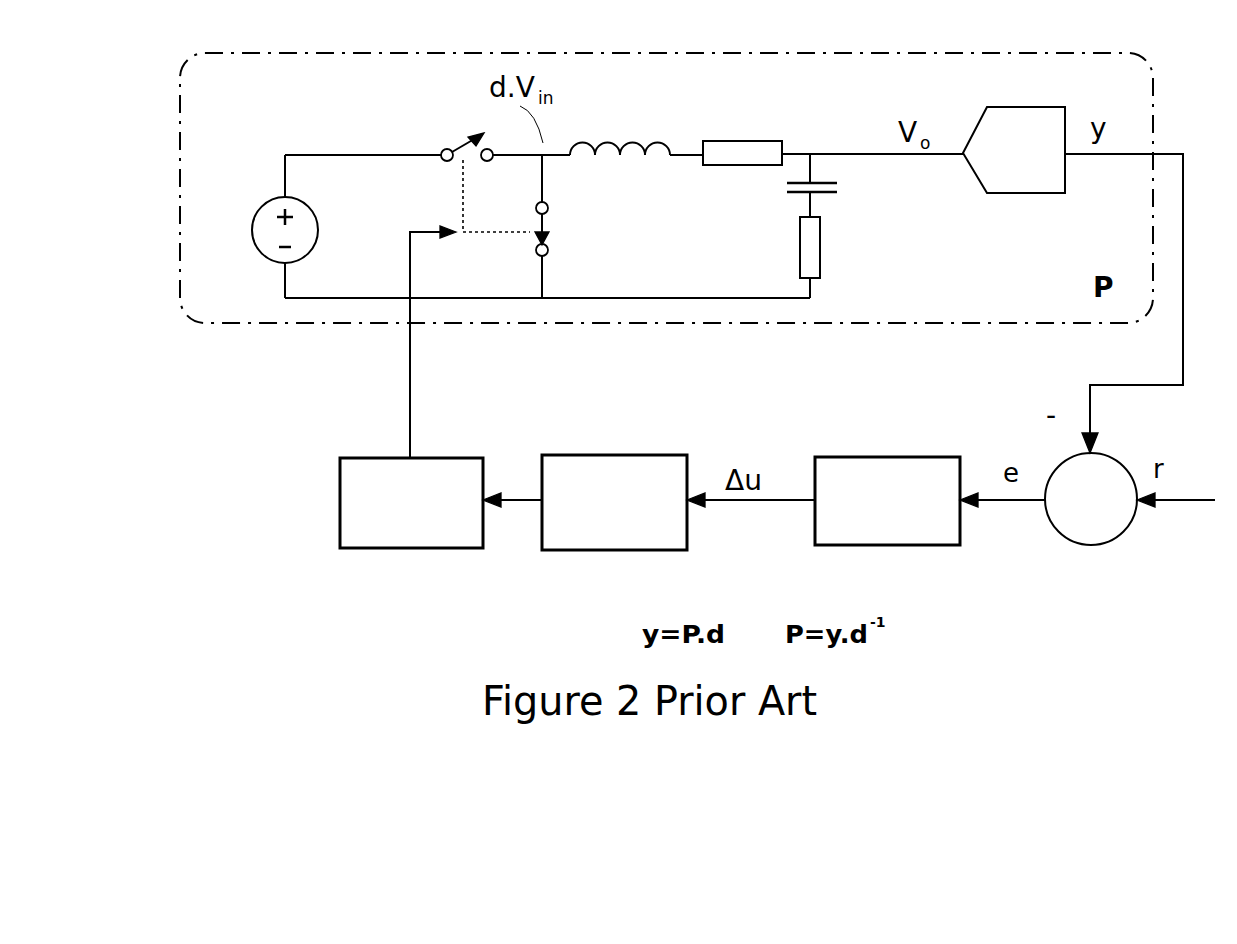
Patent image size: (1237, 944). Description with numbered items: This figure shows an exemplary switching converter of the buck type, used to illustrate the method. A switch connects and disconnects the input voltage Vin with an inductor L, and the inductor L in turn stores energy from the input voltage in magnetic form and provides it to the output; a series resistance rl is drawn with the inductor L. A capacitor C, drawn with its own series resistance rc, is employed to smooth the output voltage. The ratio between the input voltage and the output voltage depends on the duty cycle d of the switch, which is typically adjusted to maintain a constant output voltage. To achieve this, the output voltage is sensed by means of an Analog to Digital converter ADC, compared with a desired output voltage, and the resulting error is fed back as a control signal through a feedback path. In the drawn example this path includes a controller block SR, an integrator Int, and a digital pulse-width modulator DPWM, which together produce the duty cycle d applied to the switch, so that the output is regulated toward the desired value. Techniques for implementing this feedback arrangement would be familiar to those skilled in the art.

The input voltage Vin is at (261, 226).
The duty cycle d is at (466, 295).
The inductor L is at (620, 127).
The inductor series resistance rl is at (742, 136).
The capacitor C is at (827, 185).
The capacitor series resistance rc is at (829, 257).
The Analog to Digital converter ADC is at (1014, 150).
The S(z)/R(z) controller block SR is at (921, 503).
The integrator Int is at (614, 502).
The digital pulse width modulator DPWM is at (411, 503).